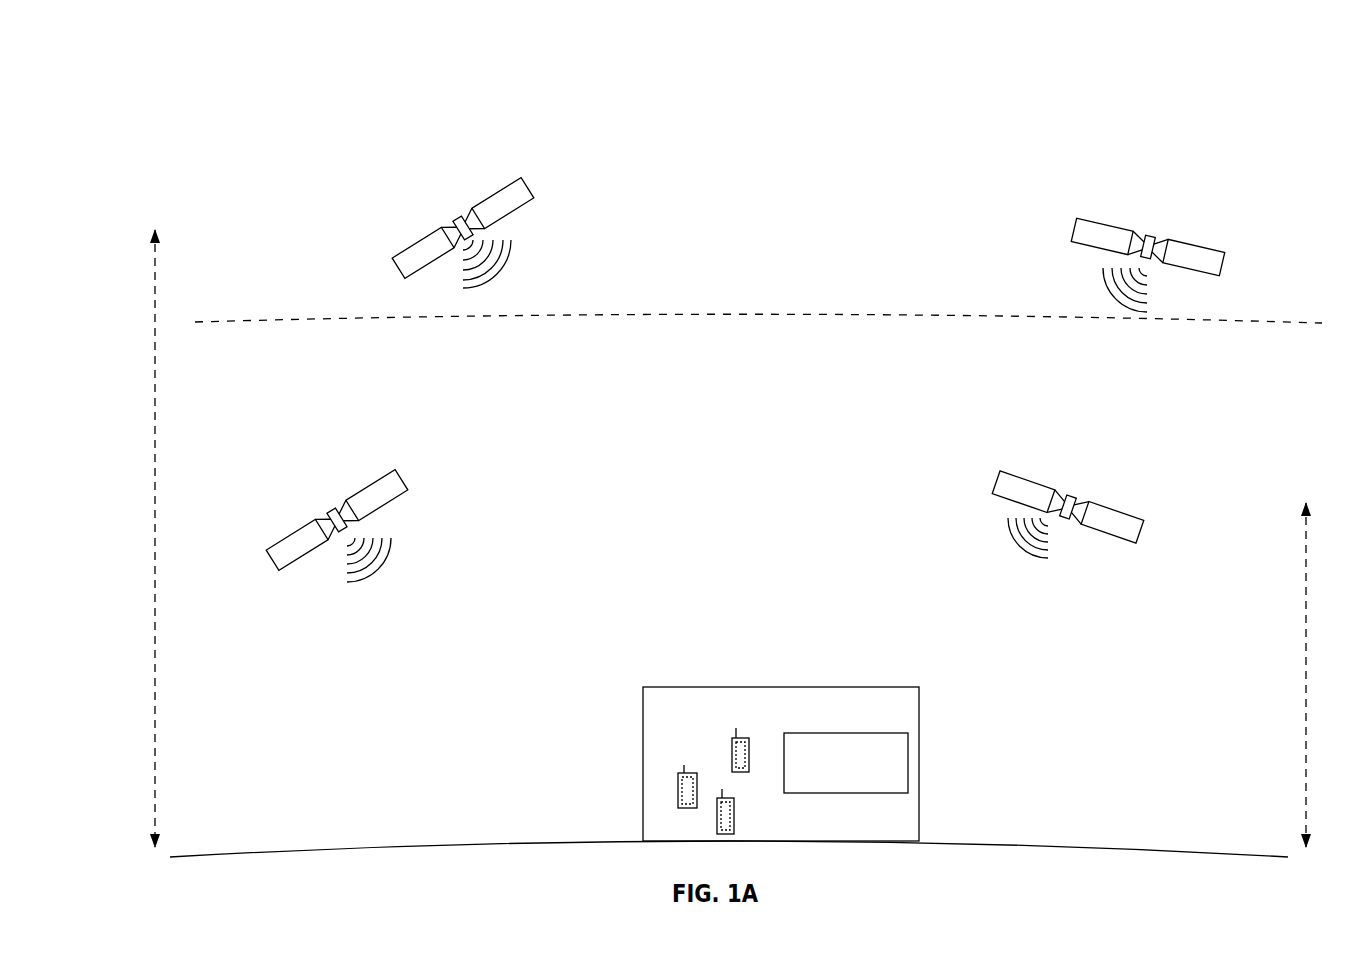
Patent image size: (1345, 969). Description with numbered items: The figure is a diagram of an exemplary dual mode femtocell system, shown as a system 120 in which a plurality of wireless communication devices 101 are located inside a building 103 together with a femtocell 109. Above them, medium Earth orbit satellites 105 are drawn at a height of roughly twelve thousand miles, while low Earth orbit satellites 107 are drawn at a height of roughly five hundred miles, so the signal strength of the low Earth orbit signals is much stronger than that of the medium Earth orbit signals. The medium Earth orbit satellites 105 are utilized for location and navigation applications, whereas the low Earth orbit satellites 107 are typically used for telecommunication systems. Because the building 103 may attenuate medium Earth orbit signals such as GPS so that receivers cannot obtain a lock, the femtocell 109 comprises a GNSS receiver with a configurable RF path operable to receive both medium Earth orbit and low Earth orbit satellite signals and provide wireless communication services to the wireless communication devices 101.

The satellite communication system 120 is at (342, 118).
The medium Earth orbit (MEO) satellites 105 is at (563, 230).
The low Earth orbit (LEO) satellites 107 is at (983, 509).
The building 103 is at (715, 741).
The femtocell 109 is at (865, 787).
The wireless communication devices 101 is at (723, 751).